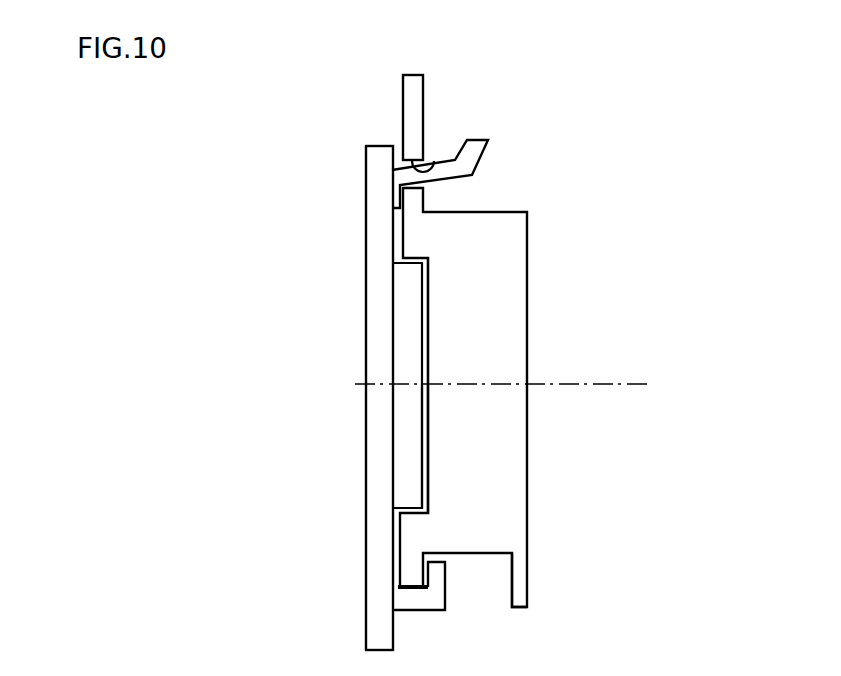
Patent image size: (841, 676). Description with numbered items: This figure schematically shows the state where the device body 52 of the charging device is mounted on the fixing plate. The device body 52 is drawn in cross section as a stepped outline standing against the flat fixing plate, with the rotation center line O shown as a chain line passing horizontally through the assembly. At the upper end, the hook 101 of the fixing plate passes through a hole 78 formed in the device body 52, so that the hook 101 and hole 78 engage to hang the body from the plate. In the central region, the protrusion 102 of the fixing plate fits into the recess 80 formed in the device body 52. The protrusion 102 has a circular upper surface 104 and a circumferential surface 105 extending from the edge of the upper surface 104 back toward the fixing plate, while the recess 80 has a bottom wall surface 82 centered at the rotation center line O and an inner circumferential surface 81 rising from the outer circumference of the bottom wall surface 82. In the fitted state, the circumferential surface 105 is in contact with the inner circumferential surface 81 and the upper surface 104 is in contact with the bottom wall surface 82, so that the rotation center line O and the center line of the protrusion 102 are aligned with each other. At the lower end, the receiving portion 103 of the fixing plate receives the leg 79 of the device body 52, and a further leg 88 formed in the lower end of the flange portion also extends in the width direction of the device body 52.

The device body 52 is at (538, 290).
The hole 78 is at (436, 163).
The hook 101 is at (472, 153).
The protrusion 102 is at (349, 385).
The upper surface 104 is at (423, 314).
The circumferential surface 105 is at (403, 325).
The recess 80 is at (359, 449).
The inner circumferential surface 81 is at (415, 510).
The bottom wall surface 82 is at (428, 457).
The leg 79 is at (412, 572).
The receiving portion 103 is at (437, 597).
The leg 88 is at (520, 597).
The rotation center line O is at (528, 385).